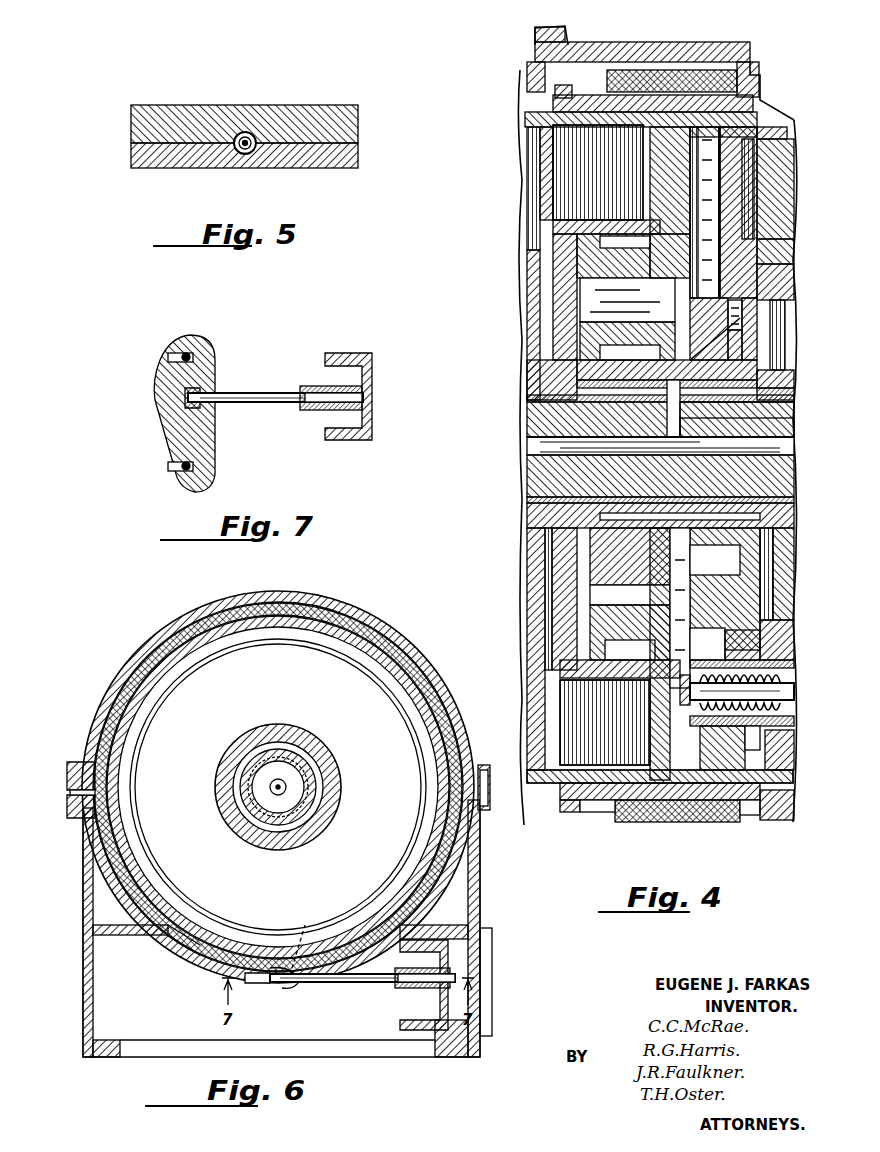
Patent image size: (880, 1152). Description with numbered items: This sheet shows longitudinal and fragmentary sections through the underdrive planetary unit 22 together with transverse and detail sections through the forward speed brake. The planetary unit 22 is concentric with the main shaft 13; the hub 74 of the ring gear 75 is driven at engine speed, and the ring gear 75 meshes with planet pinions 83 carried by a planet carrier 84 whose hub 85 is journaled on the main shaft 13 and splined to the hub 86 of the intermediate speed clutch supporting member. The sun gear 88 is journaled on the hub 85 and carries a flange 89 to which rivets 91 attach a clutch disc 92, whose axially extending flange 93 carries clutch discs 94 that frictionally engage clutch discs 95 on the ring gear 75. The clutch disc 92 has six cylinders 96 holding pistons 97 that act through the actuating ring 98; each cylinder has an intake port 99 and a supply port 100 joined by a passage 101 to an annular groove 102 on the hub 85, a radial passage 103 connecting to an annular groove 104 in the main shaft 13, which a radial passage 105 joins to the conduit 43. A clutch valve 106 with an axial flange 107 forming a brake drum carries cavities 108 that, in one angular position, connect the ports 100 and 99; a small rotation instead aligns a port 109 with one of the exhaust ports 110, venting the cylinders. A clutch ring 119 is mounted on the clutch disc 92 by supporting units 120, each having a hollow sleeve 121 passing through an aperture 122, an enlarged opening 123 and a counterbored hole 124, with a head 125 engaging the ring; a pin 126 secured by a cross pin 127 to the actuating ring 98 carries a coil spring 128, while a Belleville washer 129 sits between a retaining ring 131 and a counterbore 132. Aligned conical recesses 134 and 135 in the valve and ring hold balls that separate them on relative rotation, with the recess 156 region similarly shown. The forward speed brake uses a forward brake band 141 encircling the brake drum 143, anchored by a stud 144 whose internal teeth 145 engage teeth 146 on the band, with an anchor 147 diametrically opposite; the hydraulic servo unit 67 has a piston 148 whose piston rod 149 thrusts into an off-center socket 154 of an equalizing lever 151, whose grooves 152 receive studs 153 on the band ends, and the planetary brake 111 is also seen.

In FIG. 4, the main shaft 13 is at (560, 419).
In FIG. 4, the underdrive planetary unit 22 is at (512, 536).
In FIG. 4, the conduit 43 is at (790, 469).
In FIG. 6, the hydraulic servo unit 67 is at (496, 948).
In FIG. 4, the hub 74 is at (540, 387).
In FIG. 4, the ring gear 75 is at (575, 224).
In FIG. 4, the planet pinions 83 is at (600, 254).
In FIG. 4, the planet carrier 84 is at (585, 334).
In FIG. 4, the hub 85 is at (775, 393).
In FIG. 4, the hub 86 is at (775, 374).
In FIG. 4, the sun gear 88 is at (545, 364).
In FIG. 4, the flange 89 is at (760, 514).
In FIG. 4, the rivets 91 is at (750, 544).
In FIG. 4, the clutch disc 92 is at (755, 209).
In FIG. 4, the axially extending flange 93 is at (525, 117).
In FIG. 4, the clutch discs 94 is at (560, 149).
In FIG. 4, the clutch discs 95 is at (548, 194).
In FIG. 4, the cylinders 96 is at (746, 108).
In FIG. 4, the pistons 97 is at (740, 159).
In FIG. 4, the actuating ring 98 is at (665, 135).
In FIG. 4, the intake port 99 is at (765, 255).
In FIG. 4, the supply port 100 is at (735, 326).
In FIG. 4, the passage 101 is at (712, 356).
In FIG. 4, the annular groove 102 is at (700, 409).
In FIG. 4, the radial passage 103 is at (600, 444).
In FIG. 4, the annular groove 104 is at (700, 429).
In FIG. 4, the radial passage 105 is at (600, 454).
In FIG. 5, the clutch valve 106 is at (131, 154).
In FIG. 4, the clutch valve 106 is at (775, 225).
In FIG. 4, the axial flange 107 is at (555, 91).
In FIG. 4, the cavities 108 is at (742, 301).
In FIG. 4, the port 109 is at (788, 137).
In FIG. 4, the exhaust ports 110 is at (765, 127).
In FIG. 4, the planetary brake 111 is at (628, 72).
In FIG. 5, the clutch ring 119 is at (131, 125).
In FIG. 4, the clutch ring 119 is at (775, 189).
In FIG. 4, the supporting units 120 is at (775, 623).
In FIG. 4, the hollow sleeve 121 is at (762, 659).
In FIG. 4, the aperture 122 is at (740, 563).
In FIG. 4, the enlarged opening 123 is at (760, 641).
In FIG. 4, the counterbored hole 124 is at (780, 712).
In FIG. 4, the head 125 is at (780, 728).
In FIG. 4, the pin 126 is at (780, 695).
In FIG. 4, the cross pin 127 is at (600, 711).
In FIG. 4, the coil spring 128 is at (780, 679).
In FIG. 4, the Belleville washer 129 is at (702, 821).
In FIG. 4, the retaining ring 131 is at (690, 684).
In FIG. 4, the counterbore 132 is at (640, 811).
In FIG. 5, the conical recesses 134 is at (236, 160).
In FIG. 5, the conical recesses 135 is at (240, 133).
In FIG. 5, the hole 156 is at (252, 137).
In FIG. 6, the forward brake band 141 is at (122, 691).
In FIG. 6, the brake drum 143 is at (158, 668).
In FIG. 6, the stud 144 is at (80, 813).
In FIG. 6, the internal teeth 145 is at (86, 762).
In FIG. 6, the teeth 146 is at (100, 791).
In FIG. 6, the anchor 147 is at (497, 773).
In FIG. 7, the piston 148 is at (372, 361).
In FIG. 6, the piston 148 is at (440, 1003).
In FIG. 7, the piston rod 149 is at (262, 390).
In FIG. 6, the piston rod 149 is at (343, 982).
In FIG. 7, the equalizing lever 151 is at (160, 404).
In FIG. 6, the equalizing lever 151 is at (252, 982).
In FIG. 7, the grooves 152 is at (170, 355).
In FIG. 7, the studs 153 is at (190, 353).
In FIG. 6, the studs 153 is at (311, 940).
In FIG. 7, the socket 154 is at (203, 388).